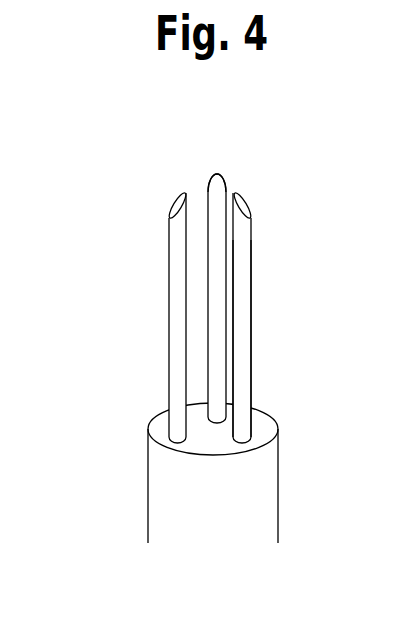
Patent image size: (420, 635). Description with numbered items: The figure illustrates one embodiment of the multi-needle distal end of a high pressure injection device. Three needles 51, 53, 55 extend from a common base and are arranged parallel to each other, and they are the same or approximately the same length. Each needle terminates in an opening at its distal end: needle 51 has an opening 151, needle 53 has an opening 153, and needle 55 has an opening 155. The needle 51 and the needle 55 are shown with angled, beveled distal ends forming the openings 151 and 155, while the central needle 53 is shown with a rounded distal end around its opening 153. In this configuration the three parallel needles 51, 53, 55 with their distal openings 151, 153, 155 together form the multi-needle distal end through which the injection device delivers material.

The needle 51 is at (131, 317).
The opening 151 is at (170, 209).
The needle 53 is at (223, 272).
The opening 153 is at (227, 173).
The needle 55 is at (286, 308).
The opening 155 is at (242, 320).